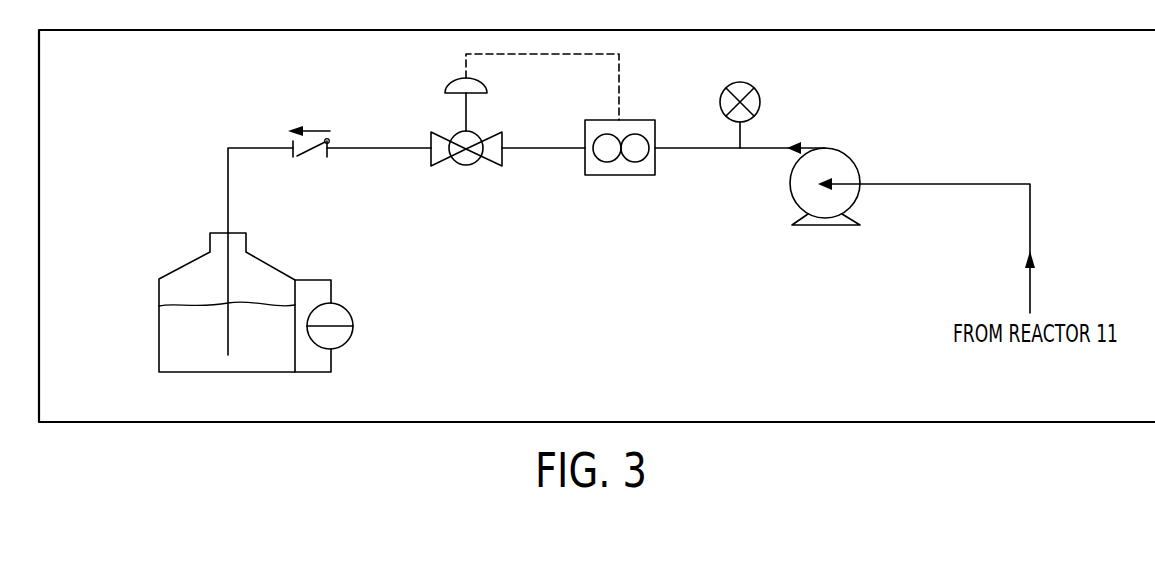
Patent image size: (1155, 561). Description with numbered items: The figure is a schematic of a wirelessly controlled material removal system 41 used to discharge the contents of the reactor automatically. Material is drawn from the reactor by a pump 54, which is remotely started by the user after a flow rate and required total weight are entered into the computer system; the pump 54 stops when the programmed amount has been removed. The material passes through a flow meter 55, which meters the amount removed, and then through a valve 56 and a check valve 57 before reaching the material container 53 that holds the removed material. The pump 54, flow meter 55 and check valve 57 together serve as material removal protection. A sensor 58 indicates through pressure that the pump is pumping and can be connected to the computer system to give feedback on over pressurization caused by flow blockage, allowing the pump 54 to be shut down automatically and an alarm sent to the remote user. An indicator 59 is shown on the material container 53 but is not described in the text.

The removal system 41 is at (184, 128).
The material container 53 is at (159, 326).
The pump 54 is at (791, 185).
The flow meter 55 is at (618, 176).
The valve 56 is at (464, 167).
The check valve 57 is at (310, 156).
The sensor 58 is at (720, 102).
The level indicator 59 is at (354, 322).